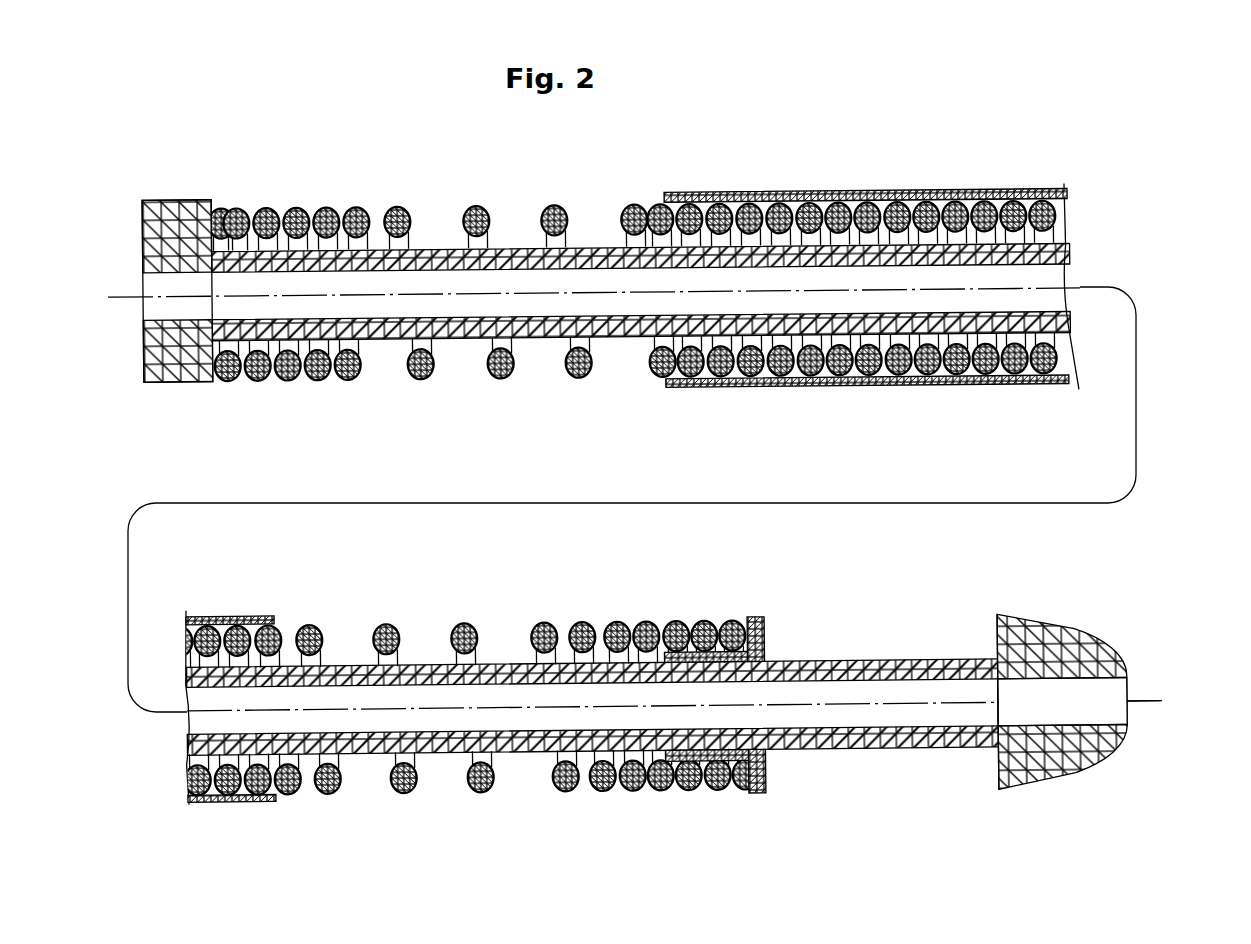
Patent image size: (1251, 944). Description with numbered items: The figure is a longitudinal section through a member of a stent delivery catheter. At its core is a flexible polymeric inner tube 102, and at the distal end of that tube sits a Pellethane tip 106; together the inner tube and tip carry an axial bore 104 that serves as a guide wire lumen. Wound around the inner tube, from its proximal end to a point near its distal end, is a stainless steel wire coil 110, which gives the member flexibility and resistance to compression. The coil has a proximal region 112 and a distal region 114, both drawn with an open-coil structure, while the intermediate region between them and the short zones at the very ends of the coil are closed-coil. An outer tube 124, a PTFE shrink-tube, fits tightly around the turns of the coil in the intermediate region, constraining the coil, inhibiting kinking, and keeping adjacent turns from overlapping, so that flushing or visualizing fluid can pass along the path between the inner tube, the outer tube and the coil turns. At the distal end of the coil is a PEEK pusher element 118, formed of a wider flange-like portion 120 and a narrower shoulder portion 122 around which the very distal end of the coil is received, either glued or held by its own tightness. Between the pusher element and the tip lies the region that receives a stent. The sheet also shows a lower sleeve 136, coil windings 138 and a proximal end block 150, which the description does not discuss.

The inner tube 102 is at (1060, 254).
The axial bore 104 is at (1120, 712).
The tip 106 is at (1083, 642).
The wire coil 110 is at (727, 215).
The proximal region 112 is at (696, 392).
The distal region 114 is at (625, 608).
The pusher element 118 is at (757, 618).
The flange-like portion 120 is at (767, 778).
The shoulder portion 122 is at (692, 761).
The outer tube 124 is at (857, 192).
The sleeve 136 is at (777, 388).
The coil windings 138 is at (742, 348).
The proximal end block 150 is at (186, 208).